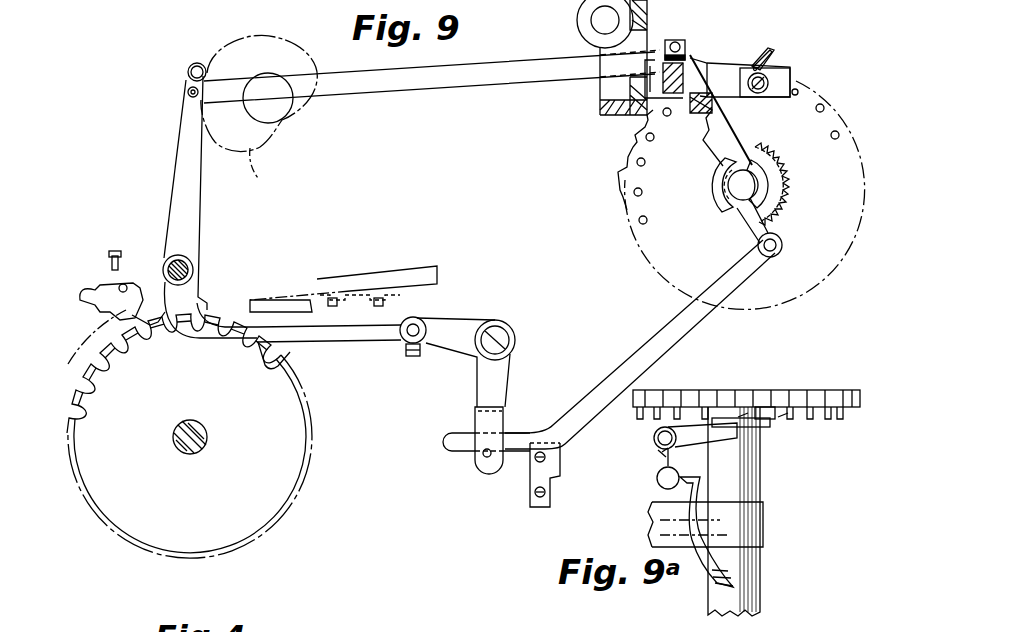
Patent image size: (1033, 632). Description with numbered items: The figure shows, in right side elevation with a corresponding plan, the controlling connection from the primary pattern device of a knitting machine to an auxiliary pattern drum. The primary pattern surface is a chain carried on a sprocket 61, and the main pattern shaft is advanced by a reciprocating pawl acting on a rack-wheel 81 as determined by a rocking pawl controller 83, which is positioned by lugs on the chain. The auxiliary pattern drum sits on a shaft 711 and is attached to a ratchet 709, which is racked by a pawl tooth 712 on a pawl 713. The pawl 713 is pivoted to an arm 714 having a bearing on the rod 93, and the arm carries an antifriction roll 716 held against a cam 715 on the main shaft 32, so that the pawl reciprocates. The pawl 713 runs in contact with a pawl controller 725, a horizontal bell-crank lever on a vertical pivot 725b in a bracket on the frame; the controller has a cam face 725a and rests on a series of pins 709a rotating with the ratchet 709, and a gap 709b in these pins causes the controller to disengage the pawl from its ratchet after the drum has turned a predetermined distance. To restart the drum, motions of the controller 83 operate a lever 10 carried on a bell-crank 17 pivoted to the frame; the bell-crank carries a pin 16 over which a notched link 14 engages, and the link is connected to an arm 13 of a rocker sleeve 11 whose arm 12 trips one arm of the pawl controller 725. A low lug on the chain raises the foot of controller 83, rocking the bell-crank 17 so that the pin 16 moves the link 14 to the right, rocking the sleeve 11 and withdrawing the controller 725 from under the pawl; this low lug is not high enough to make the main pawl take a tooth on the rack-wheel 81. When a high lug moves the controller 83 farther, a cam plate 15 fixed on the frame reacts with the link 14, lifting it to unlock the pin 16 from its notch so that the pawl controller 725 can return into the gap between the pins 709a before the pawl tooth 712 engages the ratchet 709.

In FIG. 9, the antifriction roll 716 is at (188, 76).
In FIG. 9, the arm 714 is at (177, 177).
In FIG. 9, the rod 93 is at (196, 270).
In FIG. 9, the pawl 713 is at (540, 72).
In FIG. 9, the main shaft 32 is at (272, 105).
In FIG. 9, the cam 715 is at (266, 172).
In FIG. 9, the vertical pivot 725b is at (673, 38).
In FIG. 9A, the vertical pivot 725b is at (654, 439).
In FIG. 9, the cam face 725a is at (755, 50).
In FIG. 9A, the cam face 725a is at (762, 430).
In FIG. 9, the pawl tooth 712 is at (770, 58).
In FIG. 9, the pawl controller 725 is at (788, 72).
In FIG. 9A, the pawl controller 725 is at (660, 460).
In FIG. 9, the ratchet 709 is at (820, 123).
In FIG. 9A, the ratchet 709 is at (815, 392).
In FIG. 9, the pins 709a is at (624, 183).
In FIG. 9A, the pins 709a is at (810, 418).
In FIG. 9A, the gap 709b is at (765, 405).
In FIG. 9, the arm 12 is at (722, 150).
In FIG. 9A, the arm 12 is at (700, 528).
In FIG. 9, the shaft 711 is at (750, 190).
In FIG. 9, the rocker sleeve 11 is at (733, 215).
In FIG. 9A, the rocker sleeve 11 is at (760, 582).
In FIG. 9, the arm 13 is at (752, 235).
In FIG. 9, the notched link 14 is at (647, 343).
In FIG. 9, the pawl controller 83 is at (88, 287).
In FIG. 9, the rack-wheel 81 is at (317, 277).
In FIG. 9, the lever 10 is at (358, 343).
In FIG. 9, the bell-crank 17 is at (478, 388).
In FIG. 9, the sprocket 61 is at (290, 444).
In FIG. 9, the pin 16 is at (485, 455).
In FIG. 9, the cam plate 15 is at (528, 492).